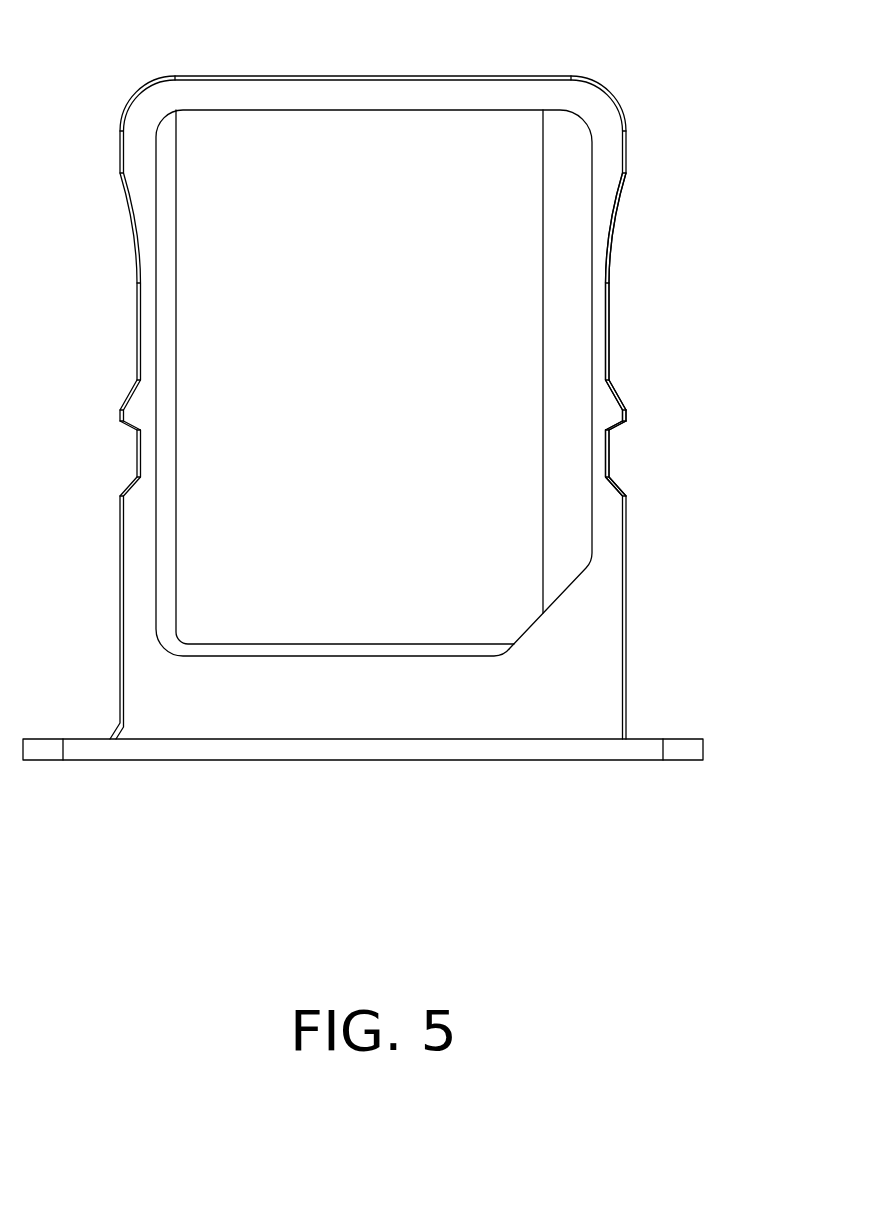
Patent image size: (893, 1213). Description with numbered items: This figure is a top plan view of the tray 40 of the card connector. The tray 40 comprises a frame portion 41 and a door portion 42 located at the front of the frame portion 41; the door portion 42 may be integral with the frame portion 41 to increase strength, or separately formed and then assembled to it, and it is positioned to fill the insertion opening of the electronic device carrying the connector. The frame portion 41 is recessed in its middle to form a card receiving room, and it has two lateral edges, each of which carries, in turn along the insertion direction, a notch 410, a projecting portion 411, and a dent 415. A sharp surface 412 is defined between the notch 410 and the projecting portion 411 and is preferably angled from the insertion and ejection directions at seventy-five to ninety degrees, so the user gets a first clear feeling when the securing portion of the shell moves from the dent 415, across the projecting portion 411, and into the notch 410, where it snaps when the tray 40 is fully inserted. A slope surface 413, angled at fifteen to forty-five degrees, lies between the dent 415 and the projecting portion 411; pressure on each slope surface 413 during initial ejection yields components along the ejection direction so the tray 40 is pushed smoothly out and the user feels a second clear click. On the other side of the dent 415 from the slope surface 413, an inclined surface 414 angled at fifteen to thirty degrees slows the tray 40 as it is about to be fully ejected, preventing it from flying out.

The tray 40 is at (127, 67).
The frame portion 41 is at (593, 622).
The door portion 42 is at (450, 745).
The notch 410 is at (612, 457).
The projecting portion 411 is at (622, 417).
The sharp surface 412 is at (620, 427).
The slope surface 413 is at (620, 393).
The inclined surface 414 is at (620, 226).
The dent 415 is at (612, 322).